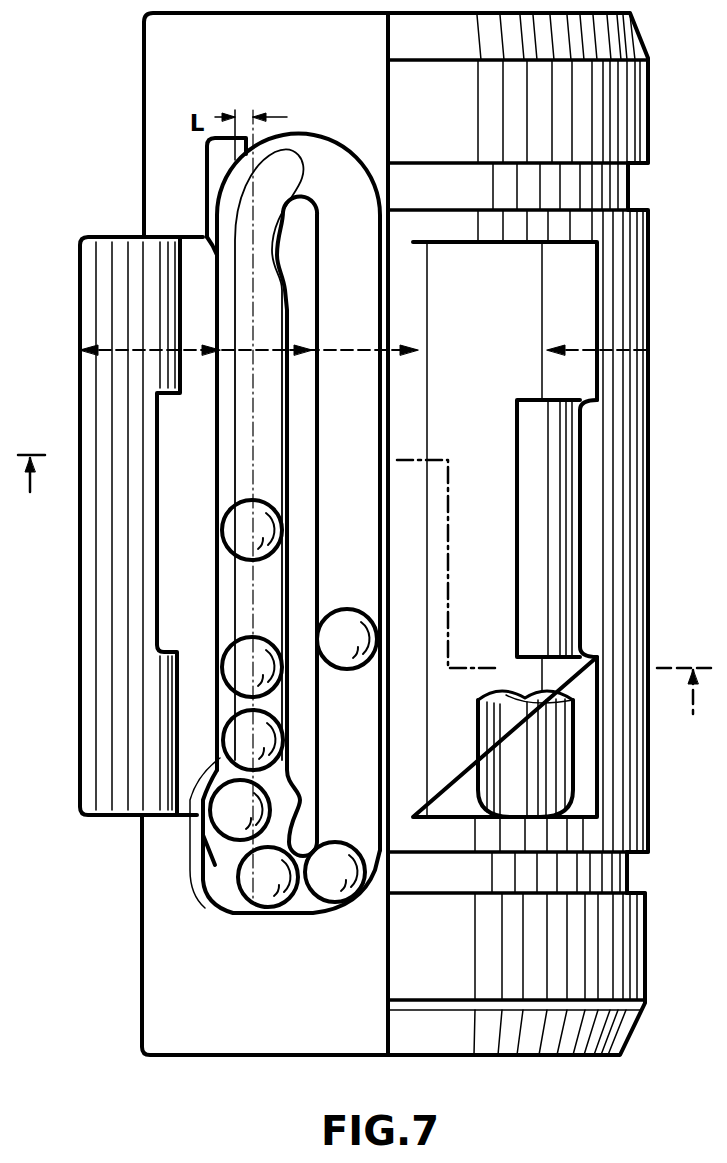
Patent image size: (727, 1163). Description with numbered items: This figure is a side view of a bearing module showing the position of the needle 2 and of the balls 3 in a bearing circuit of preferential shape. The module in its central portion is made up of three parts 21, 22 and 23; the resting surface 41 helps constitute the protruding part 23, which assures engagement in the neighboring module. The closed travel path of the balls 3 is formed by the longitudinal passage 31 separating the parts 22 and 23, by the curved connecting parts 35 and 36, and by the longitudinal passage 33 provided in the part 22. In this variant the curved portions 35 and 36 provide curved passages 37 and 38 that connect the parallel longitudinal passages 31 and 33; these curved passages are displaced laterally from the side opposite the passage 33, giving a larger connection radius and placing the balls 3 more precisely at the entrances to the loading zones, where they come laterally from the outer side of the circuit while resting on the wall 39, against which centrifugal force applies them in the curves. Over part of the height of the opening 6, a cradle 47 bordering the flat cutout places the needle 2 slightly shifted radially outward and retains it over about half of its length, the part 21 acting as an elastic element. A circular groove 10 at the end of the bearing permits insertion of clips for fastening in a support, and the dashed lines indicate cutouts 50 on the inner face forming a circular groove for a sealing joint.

The needle 2 is at (478, 762).
The balls 3 is at (233, 527).
The opening 6 is at (478, 245).
The circular groove 10 is at (642, 875).
The part 21 is at (586, 350).
The part 22 is at (336, 350).
The protruding part 23 is at (140, 345).
The longitudinal passage 31 is at (255, 453).
The longitudinal passage 33 is at (334, 418).
The curved connecting part 35 is at (318, 150).
The curved connecting part 36 is at (318, 895).
The curved passage 37 is at (207, 200).
The curved passage 38 is at (214, 870).
The wall 39 is at (191, 824).
The resting surface 41 is at (82, 630).
The cradle 47 is at (516, 523).
The cutouts 50 is at (162, 993).